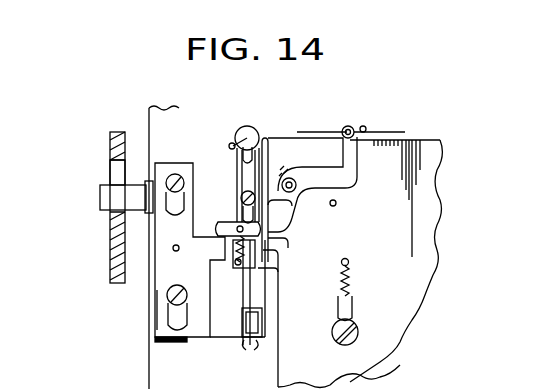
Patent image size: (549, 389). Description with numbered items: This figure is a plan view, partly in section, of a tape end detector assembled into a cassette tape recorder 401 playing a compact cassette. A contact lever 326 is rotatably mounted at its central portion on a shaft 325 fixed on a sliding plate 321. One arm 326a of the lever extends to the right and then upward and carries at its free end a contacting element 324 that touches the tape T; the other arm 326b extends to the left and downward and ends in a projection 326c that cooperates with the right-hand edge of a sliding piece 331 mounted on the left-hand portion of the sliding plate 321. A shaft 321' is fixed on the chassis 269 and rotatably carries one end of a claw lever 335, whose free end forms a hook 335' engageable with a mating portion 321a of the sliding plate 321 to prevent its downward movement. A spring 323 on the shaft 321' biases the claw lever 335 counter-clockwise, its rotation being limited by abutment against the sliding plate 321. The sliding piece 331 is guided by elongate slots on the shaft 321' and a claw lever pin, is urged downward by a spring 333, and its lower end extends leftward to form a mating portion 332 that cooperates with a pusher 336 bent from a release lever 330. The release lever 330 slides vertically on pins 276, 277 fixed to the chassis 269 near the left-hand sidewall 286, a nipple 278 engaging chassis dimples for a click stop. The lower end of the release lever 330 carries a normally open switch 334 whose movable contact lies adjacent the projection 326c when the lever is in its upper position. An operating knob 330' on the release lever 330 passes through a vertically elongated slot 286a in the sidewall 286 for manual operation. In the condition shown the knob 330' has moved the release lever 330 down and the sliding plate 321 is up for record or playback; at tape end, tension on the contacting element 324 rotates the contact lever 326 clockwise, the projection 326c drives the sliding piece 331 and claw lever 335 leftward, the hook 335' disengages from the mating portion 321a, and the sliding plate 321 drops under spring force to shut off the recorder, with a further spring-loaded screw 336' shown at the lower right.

The tape recorder 401 is at (146, 99).
The chassis 269 is at (149, 118).
The left-hand sidewall 286 is at (110, 148).
The vertically elongated slot 286a is at (117, 174).
The operating knob 330' is at (102, 197).
The pin 276 is at (172, 167).
The pin 277 is at (167, 302).
The nipple 278 is at (176, 281).
The release lever 330 is at (130, 309).
The shaft 321' is at (234, 151).
The spring 323 is at (245, 138).
The mating portion 332 is at (230, 223).
The pusher 336 is at (214, 252).
The sliding piece 331 is at (266, 162).
The shaft 325 is at (296, 181).
The tape T is at (322, 118).
The contacting element 324 is at (350, 125).
The contact lever 326 is at (336, 203).
The arm 326a is at (352, 147).
The arm 326b is at (293, 221).
The projection 326c is at (288, 241).
The mating portion 321a is at (278, 260).
The claw lever 335 is at (289, 288).
The hook 335' is at (292, 282).
The spring 333 is at (230, 261).
The normally open switch 334 is at (263, 326).
The spring screw 336' is at (364, 302).
The sliding plate 321 is at (360, 249).